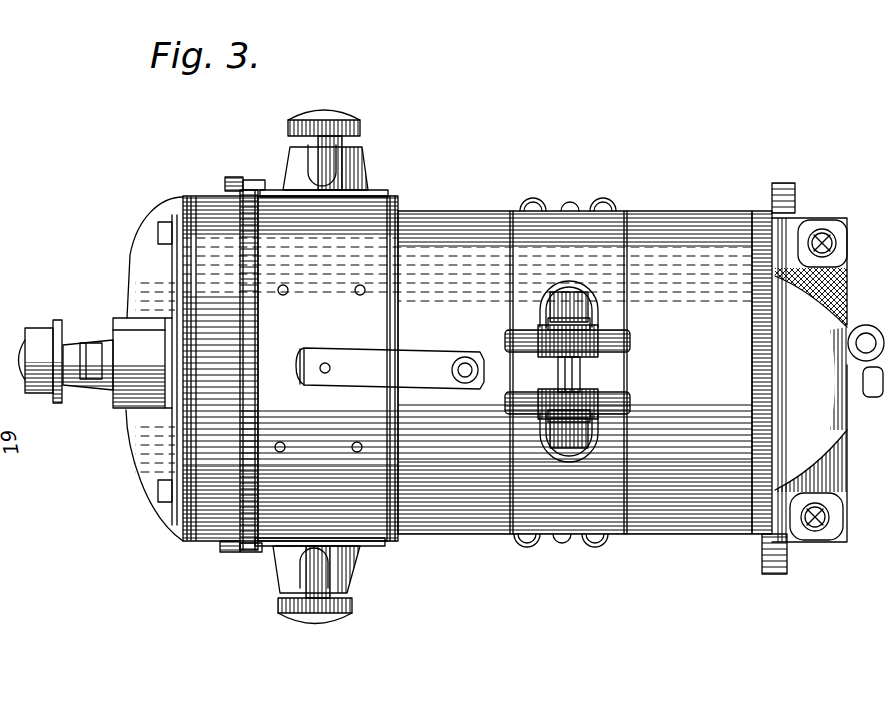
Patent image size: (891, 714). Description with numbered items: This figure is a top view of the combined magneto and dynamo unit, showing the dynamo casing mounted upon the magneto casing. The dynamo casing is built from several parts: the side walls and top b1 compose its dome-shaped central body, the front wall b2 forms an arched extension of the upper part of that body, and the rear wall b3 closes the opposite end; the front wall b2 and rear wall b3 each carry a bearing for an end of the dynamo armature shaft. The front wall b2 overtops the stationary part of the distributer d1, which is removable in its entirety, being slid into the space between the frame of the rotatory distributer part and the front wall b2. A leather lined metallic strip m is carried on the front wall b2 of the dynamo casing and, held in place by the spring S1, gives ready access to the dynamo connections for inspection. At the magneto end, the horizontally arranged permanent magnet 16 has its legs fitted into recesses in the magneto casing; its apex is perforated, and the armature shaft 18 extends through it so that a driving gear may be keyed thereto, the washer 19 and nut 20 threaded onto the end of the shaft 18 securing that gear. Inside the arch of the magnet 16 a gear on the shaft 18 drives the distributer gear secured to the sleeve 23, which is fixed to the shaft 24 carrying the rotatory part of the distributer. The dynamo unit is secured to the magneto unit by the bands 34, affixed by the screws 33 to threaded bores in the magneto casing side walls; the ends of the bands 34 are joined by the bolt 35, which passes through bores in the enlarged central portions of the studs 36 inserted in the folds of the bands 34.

The permanent magnet 16 is at (154, 369).
The armature shaft 18 is at (80, 392).
The washer 19 is at (58, 322).
The nut 20 is at (37, 360).
The sleeve 23 is at (142, 363).
The shaft 24 is at (79, 346).
The screws 33 is at (533, 204).
The bands 34 is at (568, 372).
The bolt 35 is at (580, 375).
The studs 36 is at (630, 341).
The side walls and top b1 is at (467, 368).
The front wall b2 is at (248, 318).
The rear wall b3 is at (818, 378).
The stationary part of the distributer d1 is at (368, 182).
The leather lined metallic strip m is at (322, 368).
The lever S1 is at (390, 368).